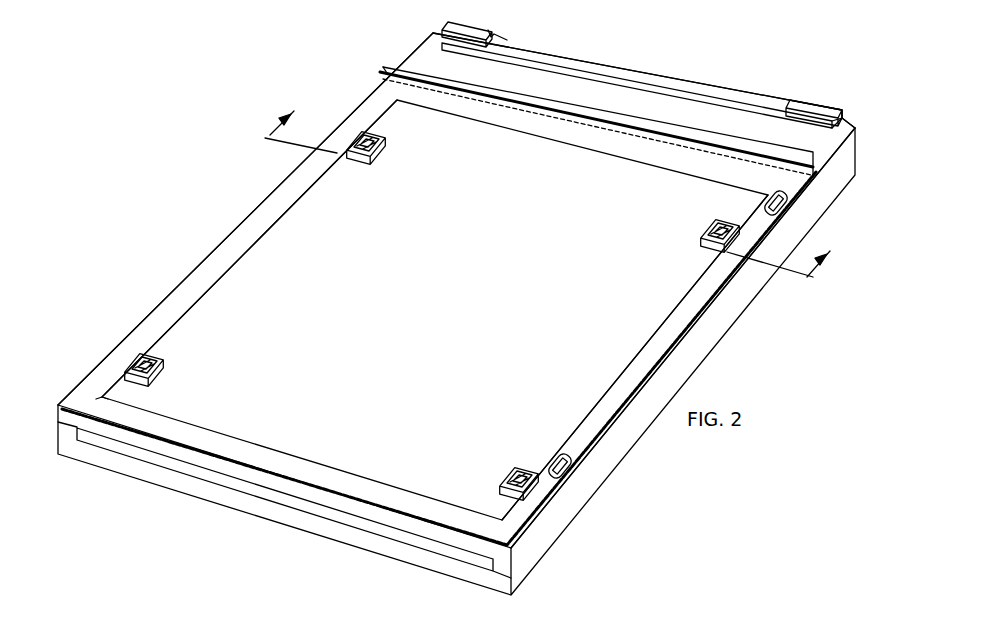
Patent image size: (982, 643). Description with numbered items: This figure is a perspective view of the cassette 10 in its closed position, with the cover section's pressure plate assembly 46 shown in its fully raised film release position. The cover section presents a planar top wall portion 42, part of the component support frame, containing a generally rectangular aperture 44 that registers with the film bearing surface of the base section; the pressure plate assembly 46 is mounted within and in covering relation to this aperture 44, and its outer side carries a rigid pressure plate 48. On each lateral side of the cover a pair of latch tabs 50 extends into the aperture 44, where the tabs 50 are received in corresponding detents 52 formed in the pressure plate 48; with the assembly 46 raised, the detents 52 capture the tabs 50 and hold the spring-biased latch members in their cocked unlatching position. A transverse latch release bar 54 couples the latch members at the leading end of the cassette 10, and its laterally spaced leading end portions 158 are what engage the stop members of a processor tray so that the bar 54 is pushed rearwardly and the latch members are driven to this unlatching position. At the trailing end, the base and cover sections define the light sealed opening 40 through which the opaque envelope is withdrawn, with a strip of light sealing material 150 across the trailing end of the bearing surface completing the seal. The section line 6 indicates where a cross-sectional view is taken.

The cassette 10 is at (232, 184).
The light sealed opening 40 is at (322, 520).
The planar top wall portion 42 is at (198, 282).
The generally rectangular aperture 44 is at (104, 385).
The pressure plate assembly 46 is at (268, 284).
The rigid pressure plate 48 is at (298, 202).
The latch tabs 50 is at (376, 155).
The detents 52 is at (384, 142).
The transverse latch release bar 54 is at (694, 86).
The strip of light sealing material 150 is at (698, 302).
The leading end portions 158 is at (478, 28).
The section line 6- 6 is at (552, 184).